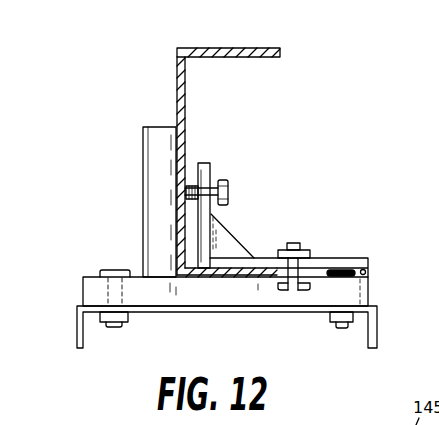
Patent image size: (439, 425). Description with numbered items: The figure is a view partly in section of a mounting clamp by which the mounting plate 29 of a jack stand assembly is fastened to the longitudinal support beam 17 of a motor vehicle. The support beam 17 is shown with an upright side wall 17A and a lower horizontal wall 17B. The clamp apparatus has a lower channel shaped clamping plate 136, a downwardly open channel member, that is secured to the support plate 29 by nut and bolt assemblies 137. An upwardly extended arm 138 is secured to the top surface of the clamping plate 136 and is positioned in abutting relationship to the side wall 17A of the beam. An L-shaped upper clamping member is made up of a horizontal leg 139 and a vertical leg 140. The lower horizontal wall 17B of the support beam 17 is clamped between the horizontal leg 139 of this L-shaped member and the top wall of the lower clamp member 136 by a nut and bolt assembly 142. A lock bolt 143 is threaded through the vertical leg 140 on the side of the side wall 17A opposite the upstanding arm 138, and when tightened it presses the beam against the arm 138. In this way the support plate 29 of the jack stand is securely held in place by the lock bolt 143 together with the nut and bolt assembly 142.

The longitudinal support beam 17 is at (181, 193).
The upright side wall 17A is at (186, 94).
The lower horizontal wall 17B is at (227, 278).
The mounting plate 29 is at (186, 312).
The lower channel shaped clamping plate 136 is at (362, 296).
The nut and bolt assemblies 137 is at (117, 268).
The upwardly extended arm 138 is at (155, 161).
The horizontal leg 139 is at (338, 265).
The vertical leg 140 is at (211, 167).
The nut and bolt assembly 142 is at (305, 252).
The lock bolt 143 is at (230, 192).